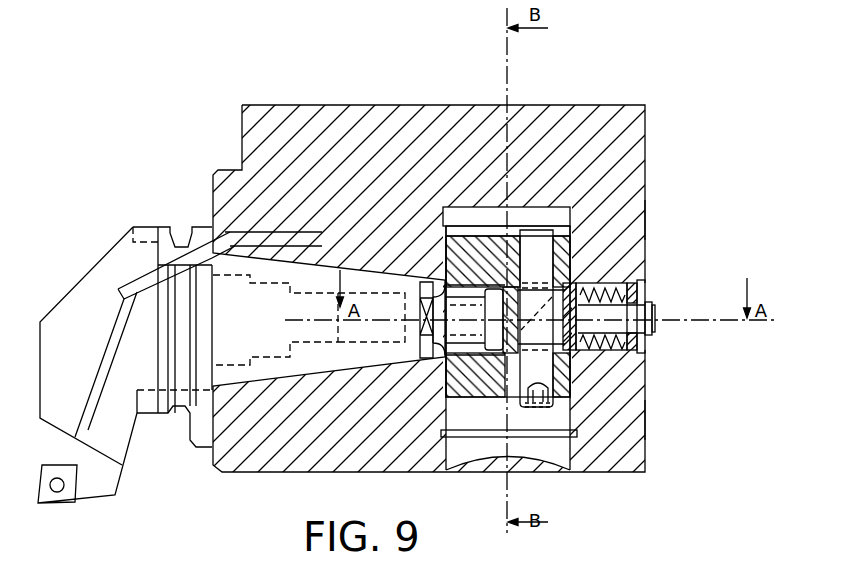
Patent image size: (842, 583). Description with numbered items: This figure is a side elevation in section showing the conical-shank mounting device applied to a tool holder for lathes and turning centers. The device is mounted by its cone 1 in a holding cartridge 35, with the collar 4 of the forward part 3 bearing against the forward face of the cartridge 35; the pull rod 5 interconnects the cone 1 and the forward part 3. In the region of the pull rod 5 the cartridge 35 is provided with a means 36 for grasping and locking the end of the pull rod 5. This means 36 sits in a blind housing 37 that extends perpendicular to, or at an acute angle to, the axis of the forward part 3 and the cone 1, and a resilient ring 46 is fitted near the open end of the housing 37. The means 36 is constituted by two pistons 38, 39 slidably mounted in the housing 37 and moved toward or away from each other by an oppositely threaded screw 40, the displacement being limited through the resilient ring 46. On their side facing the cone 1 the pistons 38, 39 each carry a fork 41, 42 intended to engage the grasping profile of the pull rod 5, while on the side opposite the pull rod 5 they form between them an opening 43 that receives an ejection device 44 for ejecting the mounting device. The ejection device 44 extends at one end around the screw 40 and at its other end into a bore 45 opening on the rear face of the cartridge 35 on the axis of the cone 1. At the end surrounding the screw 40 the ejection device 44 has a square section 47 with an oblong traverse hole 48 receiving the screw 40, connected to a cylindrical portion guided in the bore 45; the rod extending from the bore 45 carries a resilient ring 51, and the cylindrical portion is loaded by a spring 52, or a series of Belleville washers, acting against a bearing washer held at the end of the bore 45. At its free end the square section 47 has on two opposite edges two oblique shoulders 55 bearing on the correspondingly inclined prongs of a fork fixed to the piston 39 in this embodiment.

The cone 1 is at (252, 375).
The forward part 3 is at (52, 402).
The collar 4 is at (198, 232).
The pull rod 5 is at (396, 362).
The holding cartridge 35 is at (265, 118).
The means for grasping and locking 36 is at (582, 219).
The blind housing 37 is at (555, 216).
The piston 38 is at (478, 290).
The piston 39 is at (482, 290).
The oppositely threaded screw 40 is at (645, 408).
The fork 41 is at (464, 254).
The fork 42 is at (432, 360).
The opening 43 is at (498, 282).
The ejection device 44 is at (652, 288).
The bore 45 is at (603, 347).
The resilient ring 46 is at (577, 433).
The square section 47 is at (508, 356).
The oblong traverse hole 48 is at (574, 272).
The resilient ring 51 is at (650, 332).
The spring 52 is at (623, 332).
The oblique shoulders 55 is at (602, 263).